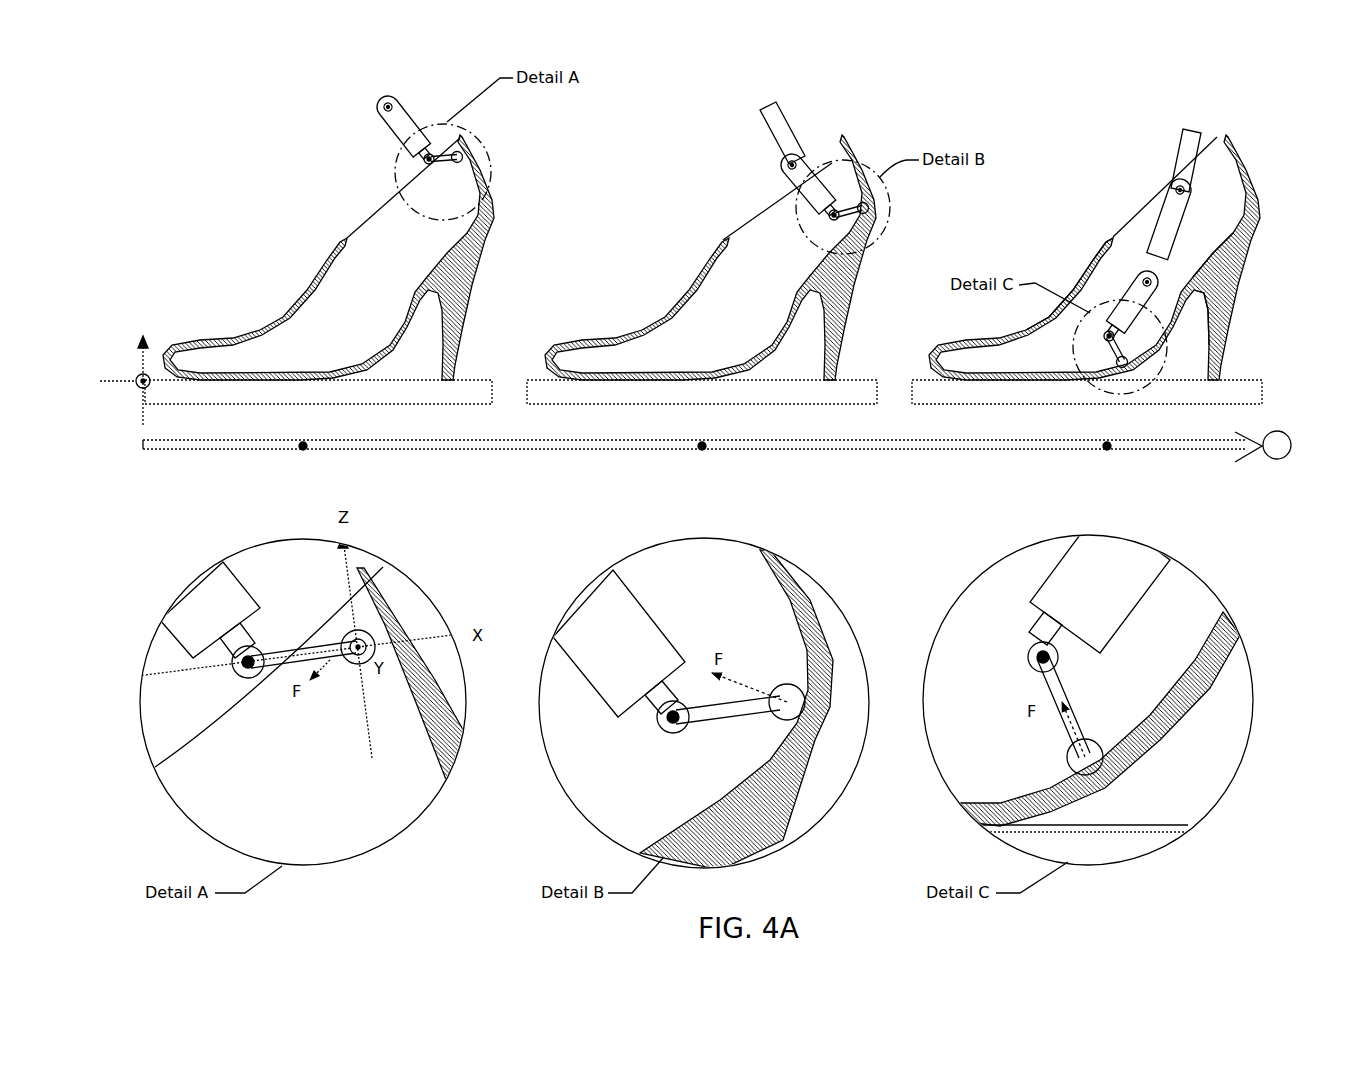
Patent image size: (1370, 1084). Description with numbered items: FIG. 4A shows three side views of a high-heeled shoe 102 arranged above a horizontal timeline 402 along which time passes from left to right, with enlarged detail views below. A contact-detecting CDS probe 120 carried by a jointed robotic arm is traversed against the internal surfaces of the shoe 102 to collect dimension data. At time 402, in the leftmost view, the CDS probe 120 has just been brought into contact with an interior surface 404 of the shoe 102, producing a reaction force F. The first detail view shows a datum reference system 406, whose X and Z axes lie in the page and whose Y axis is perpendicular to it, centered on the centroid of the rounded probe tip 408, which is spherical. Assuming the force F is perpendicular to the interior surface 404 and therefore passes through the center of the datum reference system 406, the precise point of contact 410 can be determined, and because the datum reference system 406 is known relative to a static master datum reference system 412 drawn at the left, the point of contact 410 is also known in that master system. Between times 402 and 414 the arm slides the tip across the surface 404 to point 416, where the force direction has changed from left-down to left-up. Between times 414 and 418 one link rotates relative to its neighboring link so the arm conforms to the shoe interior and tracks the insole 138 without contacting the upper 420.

The shoe 102 is at (1255, 178).
The CDS probe 120 is at (463, 141).
The insole 138 is at (1178, 313).
The timeline 402 is at (220, 455).
The interior surface 404 is at (473, 179).
The datum reference system 406 is at (352, 558).
The rounded probe tip 408 is at (350, 632).
The point of contact 410 is at (387, 633).
The master datum reference system 412 is at (152, 336).
The time 414 is at (698, 452).
The point 416 is at (890, 222).
The time 418 is at (1105, 452).
The upper 420 is at (1093, 268).